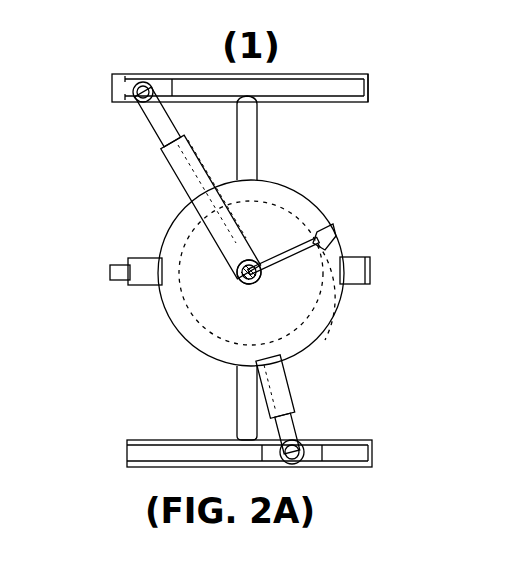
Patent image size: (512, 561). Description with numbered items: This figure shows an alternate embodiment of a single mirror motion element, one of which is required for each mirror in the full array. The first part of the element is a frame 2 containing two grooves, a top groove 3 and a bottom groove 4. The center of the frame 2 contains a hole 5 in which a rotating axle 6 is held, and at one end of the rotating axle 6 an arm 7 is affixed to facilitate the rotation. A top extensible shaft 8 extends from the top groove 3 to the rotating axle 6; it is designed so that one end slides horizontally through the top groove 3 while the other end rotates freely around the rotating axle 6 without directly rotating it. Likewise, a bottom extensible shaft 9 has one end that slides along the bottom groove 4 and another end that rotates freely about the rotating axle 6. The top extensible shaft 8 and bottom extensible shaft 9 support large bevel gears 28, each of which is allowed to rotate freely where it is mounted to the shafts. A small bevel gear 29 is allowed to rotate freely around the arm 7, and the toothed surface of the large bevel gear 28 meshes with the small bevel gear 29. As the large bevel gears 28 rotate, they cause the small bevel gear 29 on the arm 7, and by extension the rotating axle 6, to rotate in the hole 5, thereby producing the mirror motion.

The frame 2 is at (322, 73).
The top groove 3 is at (372, 86).
The bottom groove 4 is at (125, 442).
The hole 5 is at (233, 283).
The rotating axle 6 is at (249, 272).
The arm 7 is at (301, 268).
The top extensible shaft 8 is at (170, 168).
The bottom extensible shaft 9 is at (294, 391).
The large bevel gear 28 is at (331, 312).
The small bevel gear 29 is at (337, 238).